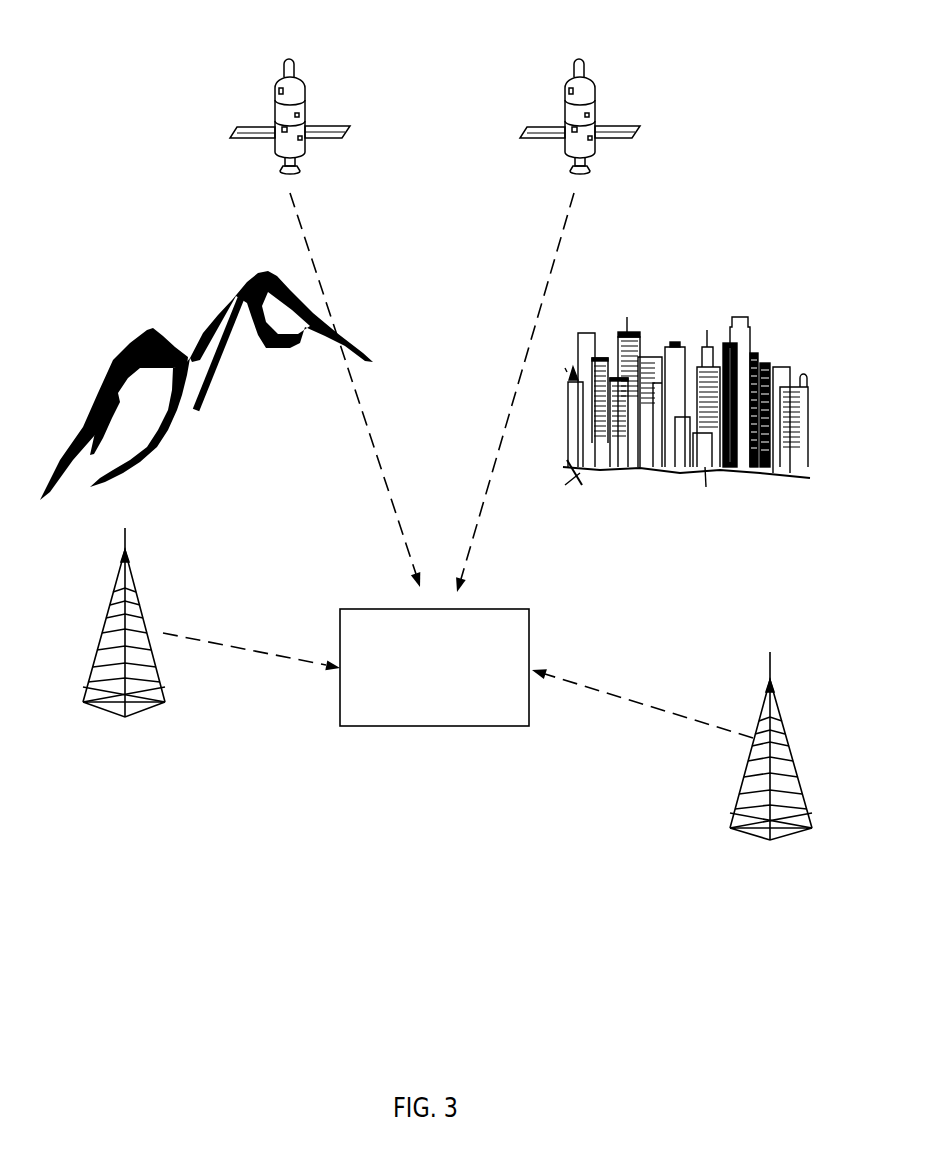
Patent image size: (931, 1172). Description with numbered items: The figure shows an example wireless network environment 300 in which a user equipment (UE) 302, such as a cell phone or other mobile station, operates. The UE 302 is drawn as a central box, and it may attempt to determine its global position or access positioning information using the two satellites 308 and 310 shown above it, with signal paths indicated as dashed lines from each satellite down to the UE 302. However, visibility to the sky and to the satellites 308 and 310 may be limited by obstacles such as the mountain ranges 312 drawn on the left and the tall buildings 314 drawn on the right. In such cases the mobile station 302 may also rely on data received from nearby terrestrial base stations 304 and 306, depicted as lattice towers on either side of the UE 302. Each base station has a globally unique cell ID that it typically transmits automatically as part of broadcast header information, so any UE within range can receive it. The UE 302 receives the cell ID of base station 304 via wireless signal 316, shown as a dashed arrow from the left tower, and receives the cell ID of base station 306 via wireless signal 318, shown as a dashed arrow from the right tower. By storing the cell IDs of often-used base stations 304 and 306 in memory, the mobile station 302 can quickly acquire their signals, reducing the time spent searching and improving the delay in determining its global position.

The wireless network environment 300 is at (157, 97).
The user equipment (UE) 302 is at (550, 600).
The base station 304 is at (125, 536).
The base station 306 is at (772, 653).
The satellite 308 is at (290, 101).
The satellite 310 is at (582, 63).
The mountain ranges 312 is at (171, 293).
The tall buildings 314 is at (781, 249).
The wireless signal 316 is at (232, 626).
The wireless signal 318 is at (663, 688).